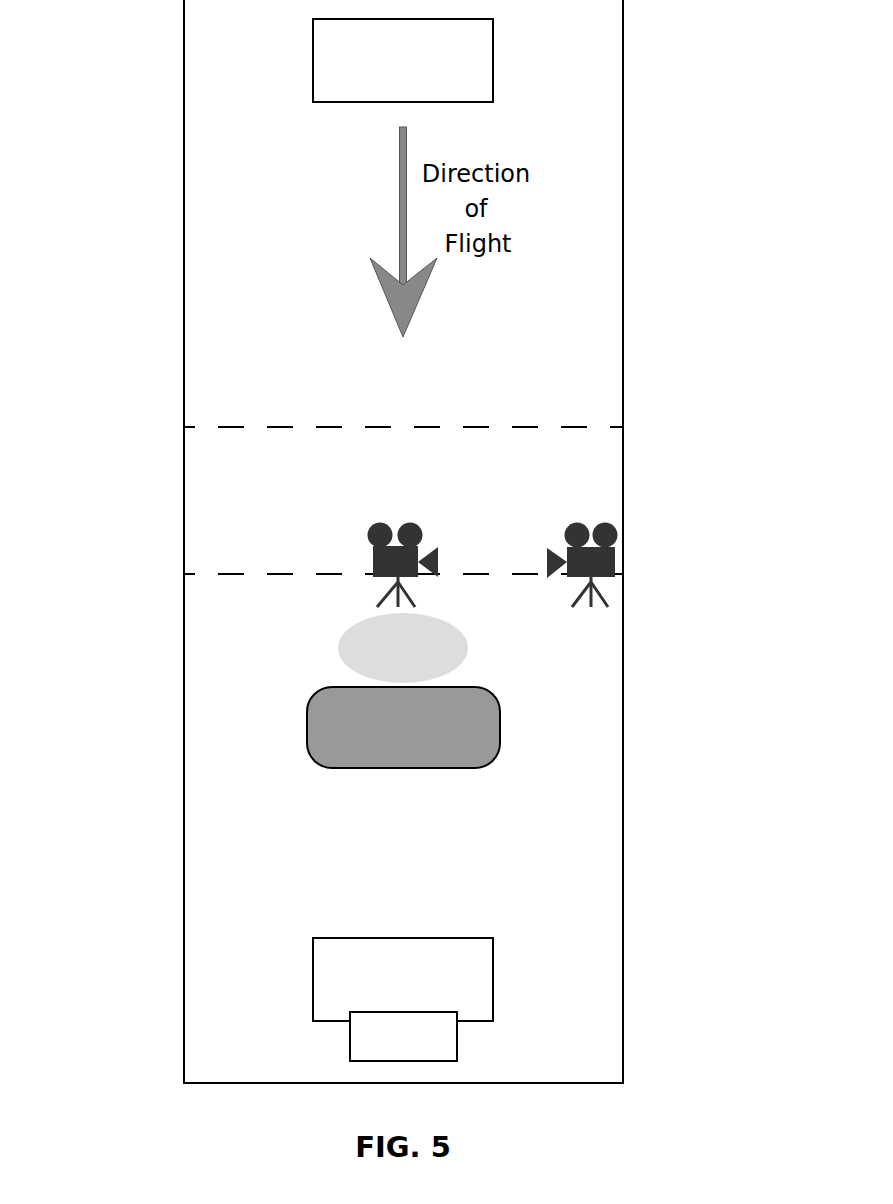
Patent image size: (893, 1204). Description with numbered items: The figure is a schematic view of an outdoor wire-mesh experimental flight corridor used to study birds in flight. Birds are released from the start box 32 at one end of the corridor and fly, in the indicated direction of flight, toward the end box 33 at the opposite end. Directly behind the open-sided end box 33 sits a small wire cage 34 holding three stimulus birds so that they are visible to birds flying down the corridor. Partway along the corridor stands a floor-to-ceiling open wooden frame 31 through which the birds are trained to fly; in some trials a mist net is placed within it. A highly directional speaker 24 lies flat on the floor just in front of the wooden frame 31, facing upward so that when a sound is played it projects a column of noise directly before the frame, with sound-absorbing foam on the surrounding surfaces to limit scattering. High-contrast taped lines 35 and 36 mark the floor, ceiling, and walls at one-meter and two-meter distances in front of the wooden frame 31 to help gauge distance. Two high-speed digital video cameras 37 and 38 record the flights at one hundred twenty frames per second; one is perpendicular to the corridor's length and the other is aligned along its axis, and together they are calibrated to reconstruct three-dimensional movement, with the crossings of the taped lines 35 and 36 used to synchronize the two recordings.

The speaker 24 is at (467, 653).
The wooden frame 31 is at (308, 750).
The start box 32 is at (340, 102).
The end box 33 is at (493, 965).
The wire cage 34 is at (457, 1045).
The taped line 35 is at (183, 575).
The taped line 36 is at (610, 427).
The high-speed digital video camera 37 is at (575, 522).
The high-speed digital video camera 38 is at (374, 522).